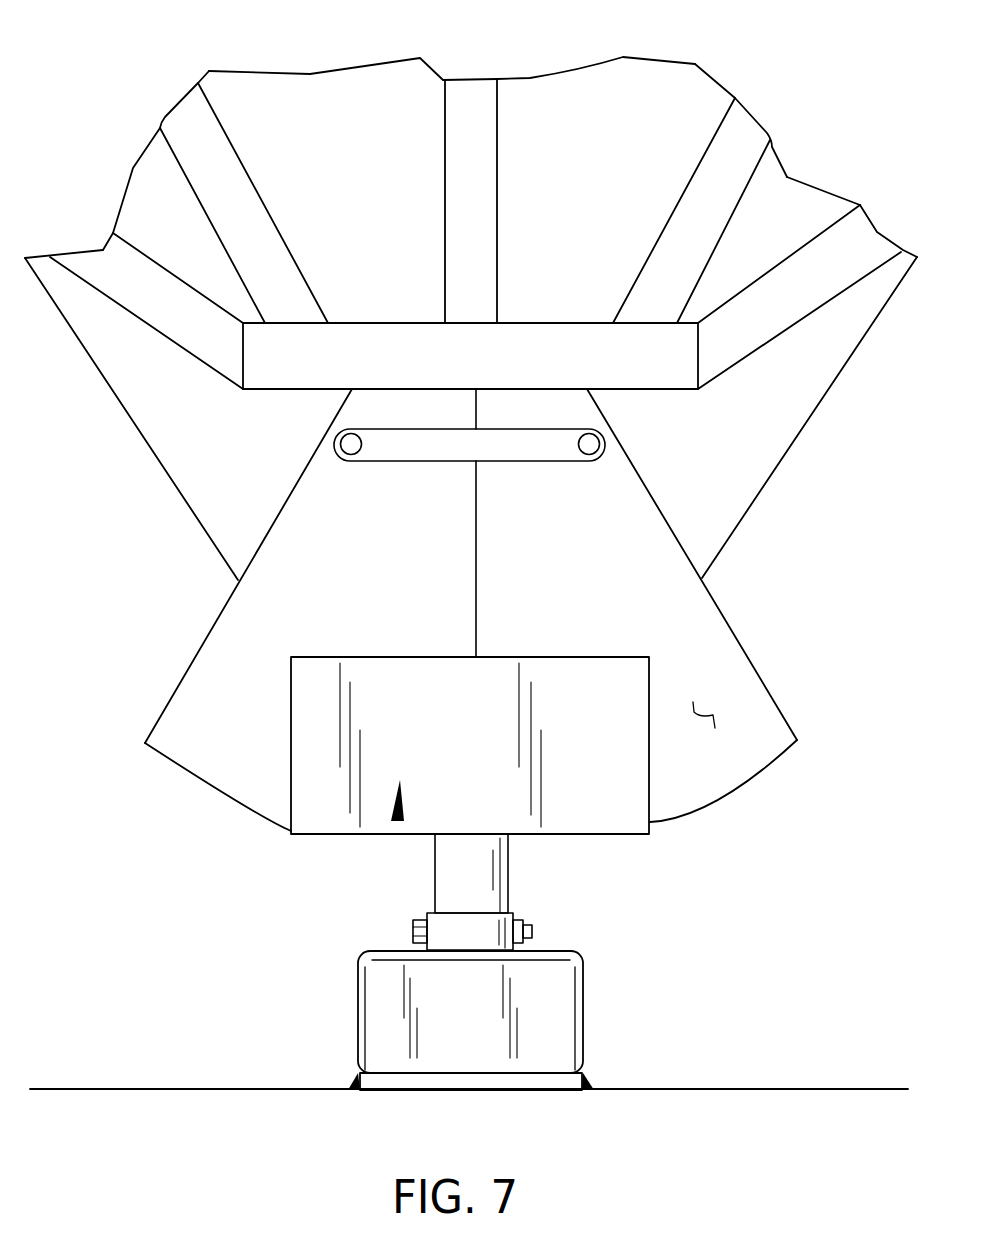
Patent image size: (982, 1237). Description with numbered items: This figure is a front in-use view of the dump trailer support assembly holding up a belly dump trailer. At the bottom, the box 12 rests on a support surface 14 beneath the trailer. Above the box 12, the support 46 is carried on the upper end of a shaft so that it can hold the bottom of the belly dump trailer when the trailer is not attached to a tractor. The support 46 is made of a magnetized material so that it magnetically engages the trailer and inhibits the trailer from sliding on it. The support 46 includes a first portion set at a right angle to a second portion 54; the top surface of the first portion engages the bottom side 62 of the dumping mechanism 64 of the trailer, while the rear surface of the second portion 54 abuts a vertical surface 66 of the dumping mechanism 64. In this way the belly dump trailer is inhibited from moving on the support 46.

The box 12 is at (366, 956).
The support surface 14 is at (783, 1089).
The support 46 is at (646, 836).
The second portion 54 is at (396, 822).
The bottom side 62 is at (240, 803).
The dumping mechanism 64 is at (128, 790).
The vertical surface 66 is at (717, 710).